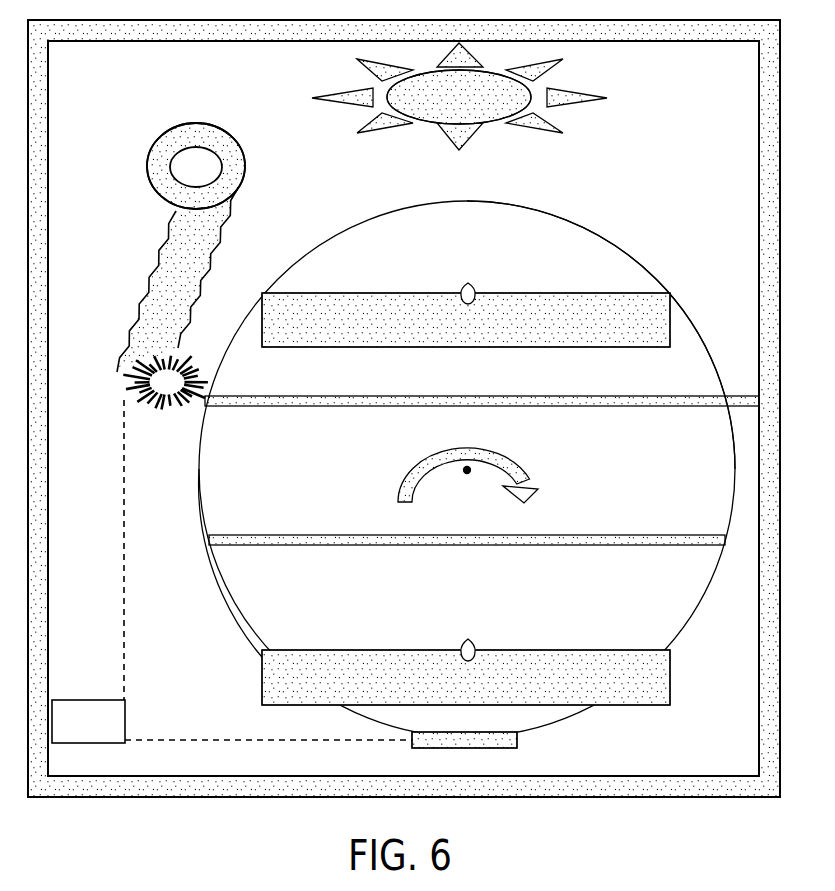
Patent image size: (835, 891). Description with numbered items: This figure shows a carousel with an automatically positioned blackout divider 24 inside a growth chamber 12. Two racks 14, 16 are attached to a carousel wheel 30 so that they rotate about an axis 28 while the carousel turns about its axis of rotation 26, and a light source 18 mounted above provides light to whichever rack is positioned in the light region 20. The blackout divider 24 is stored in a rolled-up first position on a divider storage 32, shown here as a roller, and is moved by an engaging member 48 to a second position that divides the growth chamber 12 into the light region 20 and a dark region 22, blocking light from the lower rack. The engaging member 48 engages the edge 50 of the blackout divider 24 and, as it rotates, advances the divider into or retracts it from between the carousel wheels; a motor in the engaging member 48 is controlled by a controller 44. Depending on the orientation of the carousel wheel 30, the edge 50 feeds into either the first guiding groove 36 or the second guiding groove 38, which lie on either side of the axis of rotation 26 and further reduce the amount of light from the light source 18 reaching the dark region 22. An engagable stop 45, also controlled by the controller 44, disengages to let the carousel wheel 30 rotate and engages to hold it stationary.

The growth chamber 12 is at (757, 118).
The rack 14 is at (558, 293).
The rack 16 is at (640, 705).
The light source 18 is at (490, 121).
The light region 20 is at (630, 216).
The dark region 22 is at (710, 635).
The blackout divider 24 is at (202, 280).
The axis of rotation 26 is at (465, 477).
The axis 28 is at (470, 283).
The carousel wheel 30 is at (240, 617).
The divider storage 32 is at (196, 122).
The first guiding groove 36 is at (577, 407).
The second guiding groove 38 is at (580, 533).
The controller 44 is at (232, 571).
The engagable stop 45 is at (517, 740).
The engaging member 48 is at (128, 402).
The edge 50 is at (216, 255).